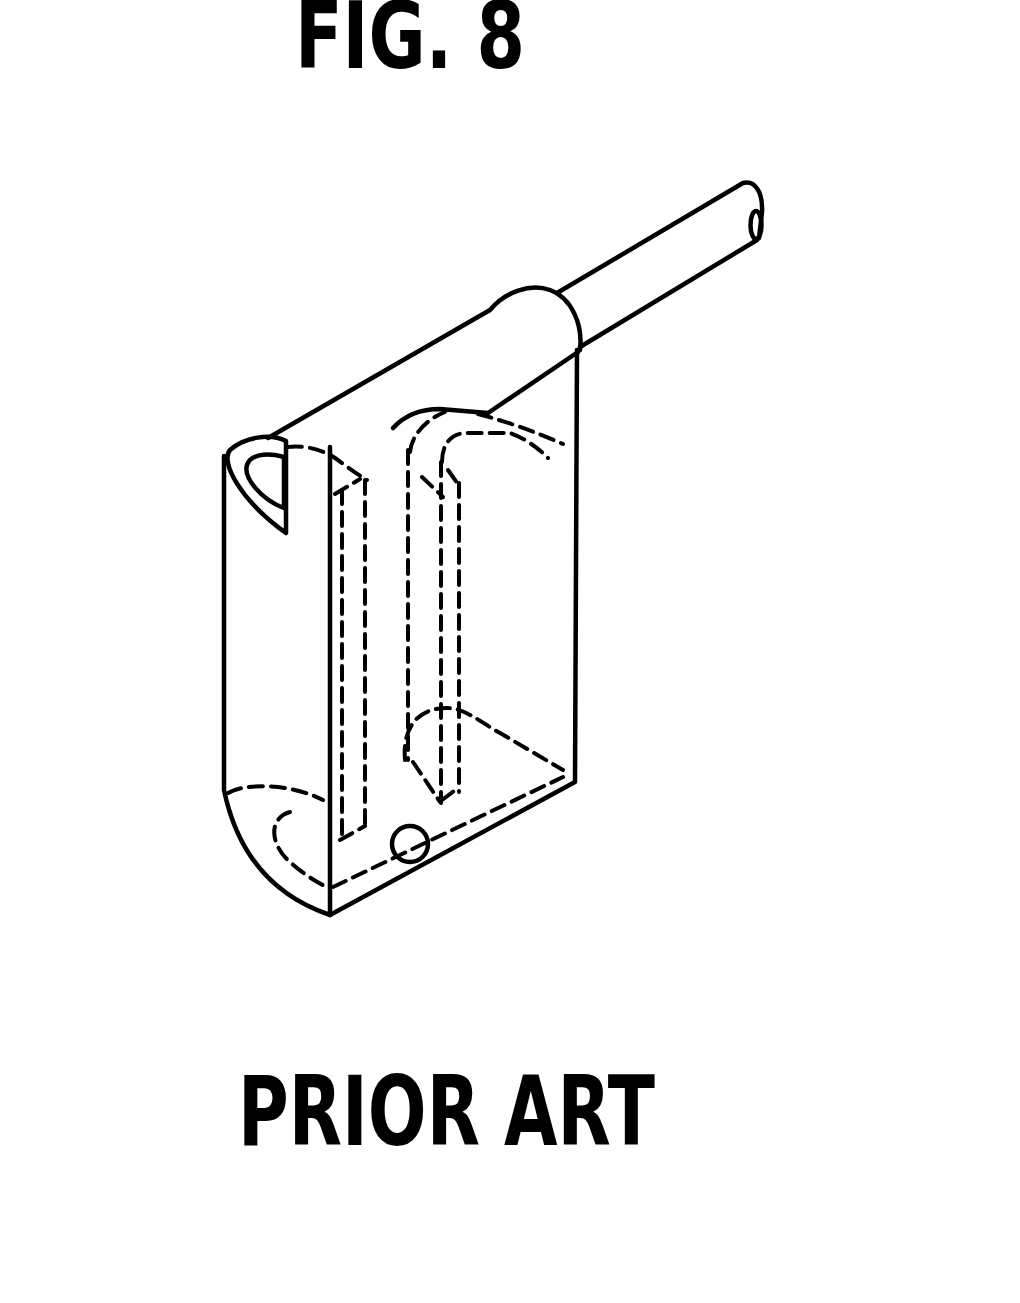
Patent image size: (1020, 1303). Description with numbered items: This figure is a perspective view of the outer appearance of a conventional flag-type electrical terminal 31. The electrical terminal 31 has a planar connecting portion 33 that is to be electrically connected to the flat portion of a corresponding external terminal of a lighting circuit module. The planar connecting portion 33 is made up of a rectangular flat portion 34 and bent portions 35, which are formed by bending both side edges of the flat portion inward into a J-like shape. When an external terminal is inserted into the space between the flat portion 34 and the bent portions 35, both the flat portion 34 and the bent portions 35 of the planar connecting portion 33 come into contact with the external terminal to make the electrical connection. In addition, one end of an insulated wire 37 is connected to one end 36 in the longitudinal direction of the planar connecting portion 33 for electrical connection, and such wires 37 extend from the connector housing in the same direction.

The electrical terminal 31 is at (577, 727).
The planar connecting portion 33 is at (522, 563).
The rectangular flat portion 34 is at (426, 858).
The bent portion 35 is at (225, 452).
The one end of the planar connecting portion 36 is at (480, 367).
The wire 37 is at (670, 293).